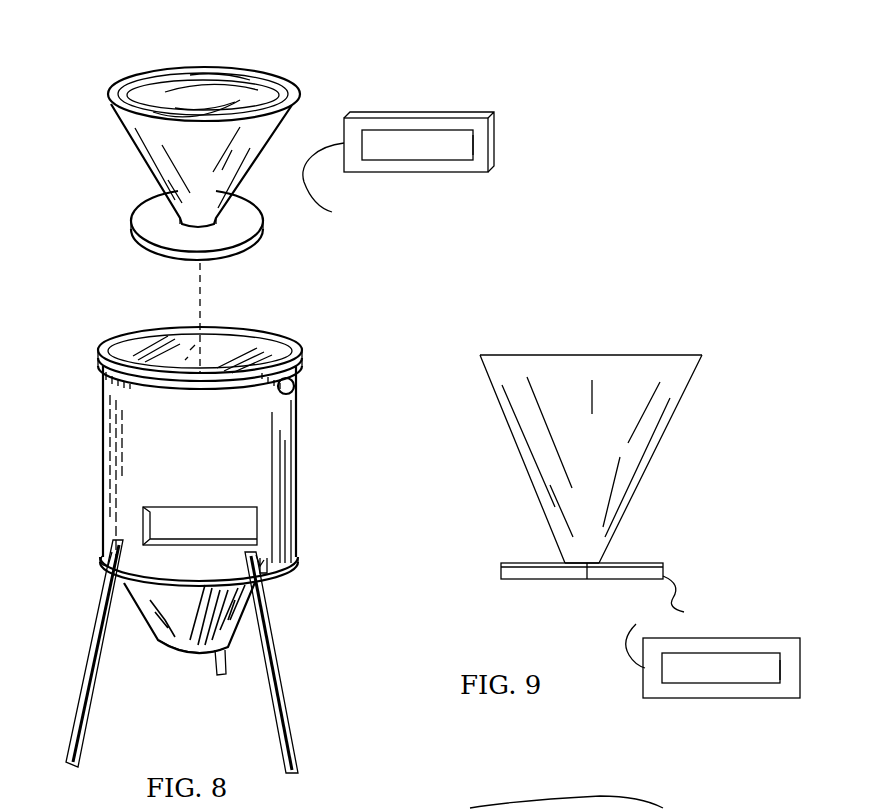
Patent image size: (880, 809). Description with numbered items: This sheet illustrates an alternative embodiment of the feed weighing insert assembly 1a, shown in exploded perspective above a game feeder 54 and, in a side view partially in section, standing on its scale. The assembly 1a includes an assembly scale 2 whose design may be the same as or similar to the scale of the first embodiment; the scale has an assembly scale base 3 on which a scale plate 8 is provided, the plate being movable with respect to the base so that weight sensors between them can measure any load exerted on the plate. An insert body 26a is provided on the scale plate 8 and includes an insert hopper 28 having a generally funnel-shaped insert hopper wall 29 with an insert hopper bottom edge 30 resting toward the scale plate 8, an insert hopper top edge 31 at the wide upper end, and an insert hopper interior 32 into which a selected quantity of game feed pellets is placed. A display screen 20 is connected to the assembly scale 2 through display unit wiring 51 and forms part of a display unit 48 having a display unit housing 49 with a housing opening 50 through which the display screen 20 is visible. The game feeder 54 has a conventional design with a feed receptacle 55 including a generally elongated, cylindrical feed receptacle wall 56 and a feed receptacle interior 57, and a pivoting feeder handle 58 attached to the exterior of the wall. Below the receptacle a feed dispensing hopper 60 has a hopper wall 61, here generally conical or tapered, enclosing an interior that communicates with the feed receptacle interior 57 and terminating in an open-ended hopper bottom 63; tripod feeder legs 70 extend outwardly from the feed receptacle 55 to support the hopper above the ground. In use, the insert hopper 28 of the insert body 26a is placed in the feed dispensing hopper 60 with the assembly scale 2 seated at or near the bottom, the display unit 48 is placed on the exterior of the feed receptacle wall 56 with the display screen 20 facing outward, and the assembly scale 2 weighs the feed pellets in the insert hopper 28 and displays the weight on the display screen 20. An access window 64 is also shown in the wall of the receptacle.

In FIG. 8, the feed weighing insert assembly 1a is at (80, 62).
In FIG. 9, the feed weighing insert assembly 1a is at (654, 294).
In FIG. 8, the assembly scale 2 is at (258, 248).
In FIG. 9, the assembly scale 2 is at (521, 587).
In FIG. 9, the assembly scale base 3 is at (558, 582).
In FIG. 9, the scale plate 8 is at (517, 558).
In FIG. 8, the display screen 20 is at (398, 143).
In FIG. 9, the display screen 20 is at (676, 670).
In FIG. 8, the insert body 26a is at (228, 58).
In FIG. 9, the insert body 26a is at (662, 343).
In FIG. 8, the insert hopper 28 is at (126, 135).
In FIG. 9, the insert hopper 28 is at (514, 452).
In FIG. 8, the insert hopper wall 29 is at (162, 148).
In FIG. 9, the insert hopper wall 29 is at (528, 404).
In FIG. 8, the insert hopper bottom edge 30 is at (190, 228).
In FIG. 9, the insert hopper bottom edge 30 is at (588, 582).
In FIG. 8, the insert hopper top edge 31 is at (112, 86).
In FIG. 9, the insert hopper top edge 31 is at (518, 355).
In FIG. 8, the insert hopper interior 32 is at (258, 78).
In FIG. 9, the insert hopper interior 32 is at (665, 808).
In FIG. 8, the display unit 48 is at (428, 112).
In FIG. 9, the display unit 48 is at (712, 700).
In FIG. 8, the display unit housing 49 is at (467, 125).
In FIG. 9, the display unit housing 49 is at (765, 640).
In FIG. 8, the housing opening 50 is at (470, 147).
In FIG. 9, the housing opening 50 is at (777, 684).
In FIG. 8, the display unit wiring 51 is at (330, 182).
In FIG. 9, the display unit wiring 51 is at (646, 621).
In FIG. 8, the game feeder 54 is at (326, 322).
In FIG. 8, the feed receptacle 55 is at (298, 442).
In FIG. 8, the feed receptacle wall 56 is at (250, 477).
In FIG. 8, the feed receptacle interior 57 is at (222, 350).
In FIG. 8, the feeder handle 58 is at (296, 386).
In FIG. 8, the feed dispensing hopper 60 is at (149, 638).
In FIG. 8, the hopper wall 61 is at (280, 586).
In FIG. 8, the hopper bottom 63 is at (195, 650).
In FIG. 8, the access window 64 is at (234, 517).
In FIG. 8, the tripod feeder legs 70 is at (266, 642).